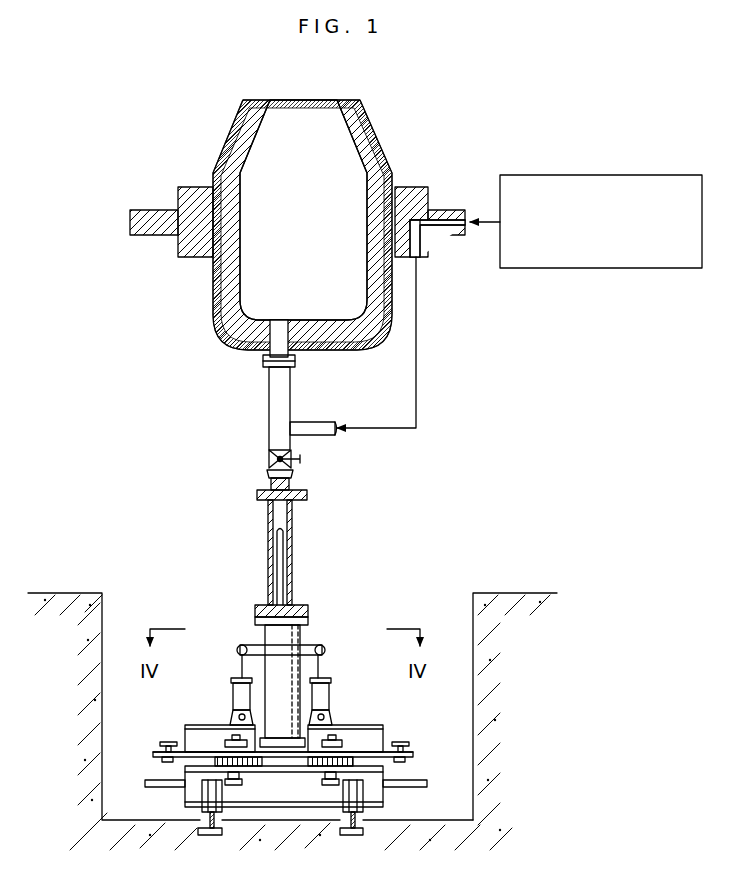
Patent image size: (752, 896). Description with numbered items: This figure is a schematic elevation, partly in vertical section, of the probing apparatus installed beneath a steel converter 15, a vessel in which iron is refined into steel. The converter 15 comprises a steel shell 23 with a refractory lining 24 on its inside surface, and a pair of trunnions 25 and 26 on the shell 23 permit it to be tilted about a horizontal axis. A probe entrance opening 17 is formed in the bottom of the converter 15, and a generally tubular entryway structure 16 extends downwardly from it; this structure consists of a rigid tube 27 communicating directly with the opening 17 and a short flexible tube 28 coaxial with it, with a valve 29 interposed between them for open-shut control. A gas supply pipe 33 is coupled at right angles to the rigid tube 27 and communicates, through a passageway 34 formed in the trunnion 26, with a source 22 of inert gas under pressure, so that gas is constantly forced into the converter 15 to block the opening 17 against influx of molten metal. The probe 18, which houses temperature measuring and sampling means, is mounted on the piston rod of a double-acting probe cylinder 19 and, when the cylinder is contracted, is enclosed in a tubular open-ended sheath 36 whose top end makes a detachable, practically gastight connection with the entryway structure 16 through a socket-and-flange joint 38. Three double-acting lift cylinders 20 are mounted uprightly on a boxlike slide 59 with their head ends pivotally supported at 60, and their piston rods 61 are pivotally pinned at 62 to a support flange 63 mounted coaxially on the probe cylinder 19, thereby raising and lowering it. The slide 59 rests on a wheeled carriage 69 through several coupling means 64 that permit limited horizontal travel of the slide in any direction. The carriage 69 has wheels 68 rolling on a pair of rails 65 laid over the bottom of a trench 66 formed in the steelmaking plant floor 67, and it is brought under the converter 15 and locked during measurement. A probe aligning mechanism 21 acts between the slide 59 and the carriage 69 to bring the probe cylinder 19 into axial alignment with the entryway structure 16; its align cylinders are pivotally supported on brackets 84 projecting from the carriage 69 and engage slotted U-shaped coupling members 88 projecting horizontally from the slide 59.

The steel converter 15 is at (388, 137).
The entryway structure 16 is at (266, 386).
The probe entrance opening 17 is at (279, 322).
The probe 18 is at (277, 532).
The probe cylinder 19 is at (296, 635).
The lift cylinders 20 is at (236, 690).
The probe aligning mechanism 21 is at (155, 768).
The source of inert gas under pressure 22 is at (575, 175).
The steel shell 23 is at (232, 142).
The refractory lining 24 is at (238, 222).
The trunnion 25 is at (148, 210).
The trunnion 26 is at (435, 187).
The rigid tube 27 is at (291, 388).
The flexible tube 28 is at (292, 482).
The valve 29 is at (268, 452).
The gas supply pipe 33 is at (315, 422).
The passageway 34 is at (463, 210).
The sheath 36 is at (292, 520).
The socket-and-flange joint 38 is at (258, 488).
The slide 59 is at (380, 748).
The pivotal support 60 is at (333, 717).
The piston rods 61 is at (322, 662).
The pivot pin 62 is at (237, 643).
The support flange 63 is at (260, 648).
The coupling means 64 is at (345, 742).
The rails 65 is at (200, 830).
The trench 66 is at (102, 615).
The steelmaking plant floor 67 is at (508, 593).
The wheels 68 is at (207, 788).
The carriage 69 is at (278, 795).
The brackets 84 is at (156, 783).
The coupling members 88 is at (163, 746).